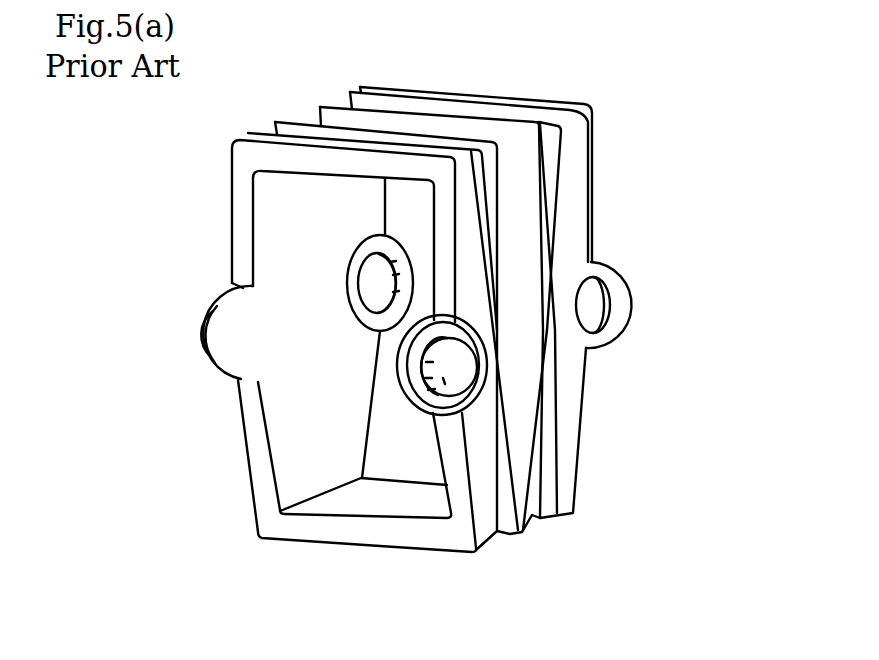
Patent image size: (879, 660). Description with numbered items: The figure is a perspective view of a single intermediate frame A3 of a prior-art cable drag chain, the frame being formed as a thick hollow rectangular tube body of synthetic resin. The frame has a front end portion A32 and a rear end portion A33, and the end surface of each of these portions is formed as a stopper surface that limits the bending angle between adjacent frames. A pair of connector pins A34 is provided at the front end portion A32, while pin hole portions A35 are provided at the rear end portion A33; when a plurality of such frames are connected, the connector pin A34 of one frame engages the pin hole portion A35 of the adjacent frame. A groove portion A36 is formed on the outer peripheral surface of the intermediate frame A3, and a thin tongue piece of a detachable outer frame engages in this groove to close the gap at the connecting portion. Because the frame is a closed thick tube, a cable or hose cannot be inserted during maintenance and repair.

The intermediate frame A3 is at (580, 96).
The front end portion A32 is at (240, 196).
The rear end portion A33 is at (594, 233).
The connector pin A34 is at (200, 334).
The pin hole portion A35 is at (596, 302).
The groove portion A36 is at (556, 147).